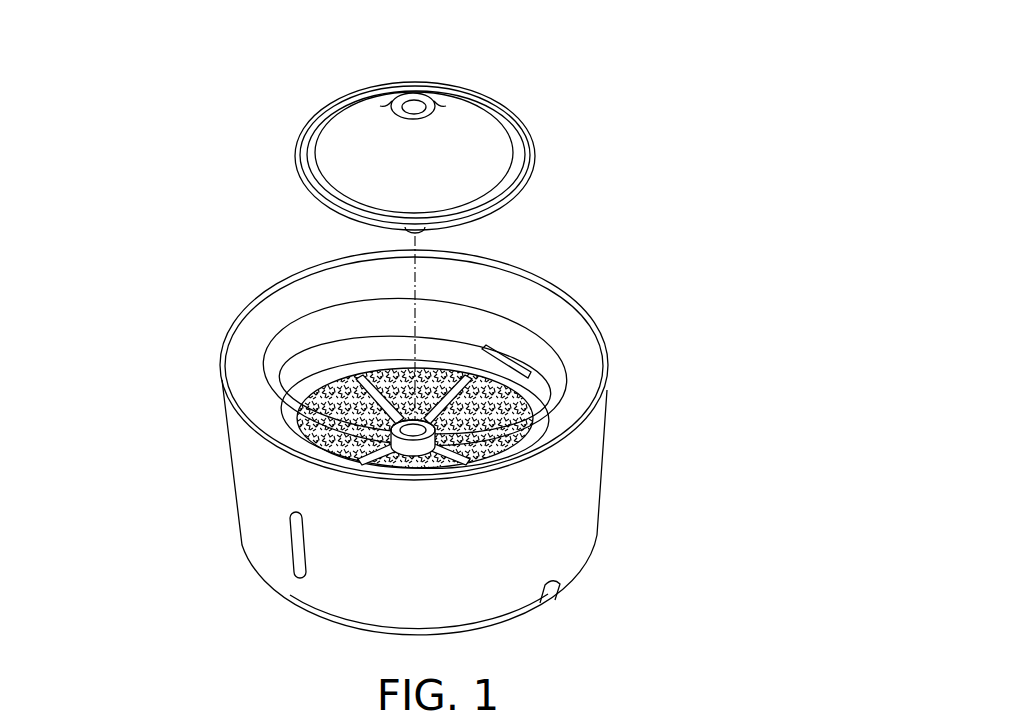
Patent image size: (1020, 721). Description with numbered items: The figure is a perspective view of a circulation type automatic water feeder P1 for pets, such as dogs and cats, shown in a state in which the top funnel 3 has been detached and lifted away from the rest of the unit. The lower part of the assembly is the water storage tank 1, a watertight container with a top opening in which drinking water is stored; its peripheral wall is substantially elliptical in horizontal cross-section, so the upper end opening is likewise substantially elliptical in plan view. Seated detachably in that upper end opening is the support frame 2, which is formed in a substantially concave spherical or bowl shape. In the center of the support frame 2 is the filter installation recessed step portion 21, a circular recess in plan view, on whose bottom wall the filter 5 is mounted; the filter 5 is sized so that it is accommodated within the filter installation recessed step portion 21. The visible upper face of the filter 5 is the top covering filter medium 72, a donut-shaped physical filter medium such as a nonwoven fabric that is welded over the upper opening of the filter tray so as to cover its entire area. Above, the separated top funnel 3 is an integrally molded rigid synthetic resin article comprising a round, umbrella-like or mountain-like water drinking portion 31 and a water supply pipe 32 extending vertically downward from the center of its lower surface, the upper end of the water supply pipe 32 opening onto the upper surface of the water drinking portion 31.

The circulation type automatic water feeder P1 is at (422, 317).
The water storage tank 1 is at (558, 525).
The support frame 2 is at (365, 341).
The filter installation recessed step portion 21 is at (313, 390).
The top funnel 3 is at (431, 116).
The water drinking portion 31 is at (457, 137).
The water supply pipe 32 is at (412, 105).
The filter 5 is at (357, 380).
The top covering filter medium 72 is at (300, 410).